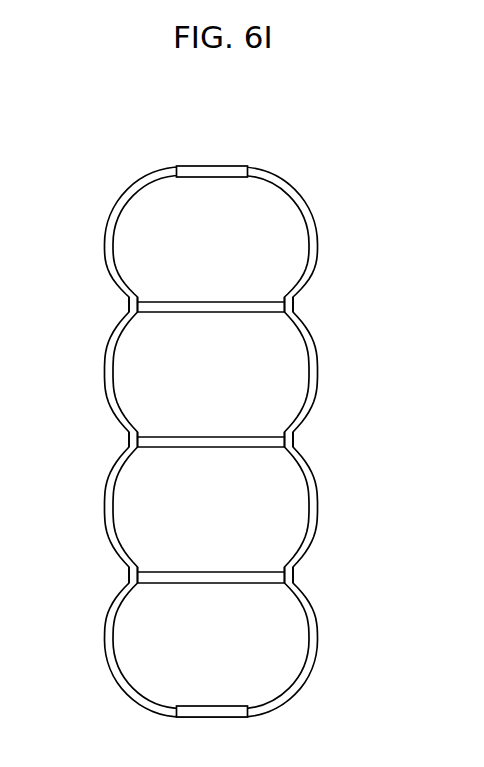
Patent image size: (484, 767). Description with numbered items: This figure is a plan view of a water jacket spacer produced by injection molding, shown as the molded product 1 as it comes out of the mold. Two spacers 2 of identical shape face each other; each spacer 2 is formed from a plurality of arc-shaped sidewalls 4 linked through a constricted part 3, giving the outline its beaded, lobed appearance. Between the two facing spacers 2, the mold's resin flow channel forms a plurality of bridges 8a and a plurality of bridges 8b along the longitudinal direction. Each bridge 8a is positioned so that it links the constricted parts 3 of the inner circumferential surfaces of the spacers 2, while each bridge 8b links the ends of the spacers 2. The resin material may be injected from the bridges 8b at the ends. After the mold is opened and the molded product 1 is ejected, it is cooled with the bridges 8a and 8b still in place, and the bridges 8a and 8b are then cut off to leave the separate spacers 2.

The molded product 1 is at (213, 404).
The spacer 2 is at (105, 234).
The constricted part 3 is at (129, 304).
The arc-shaped sidewall 4 is at (105, 507).
The bridge 8a is at (242, 313).
The bridge 8b is at (229, 166).